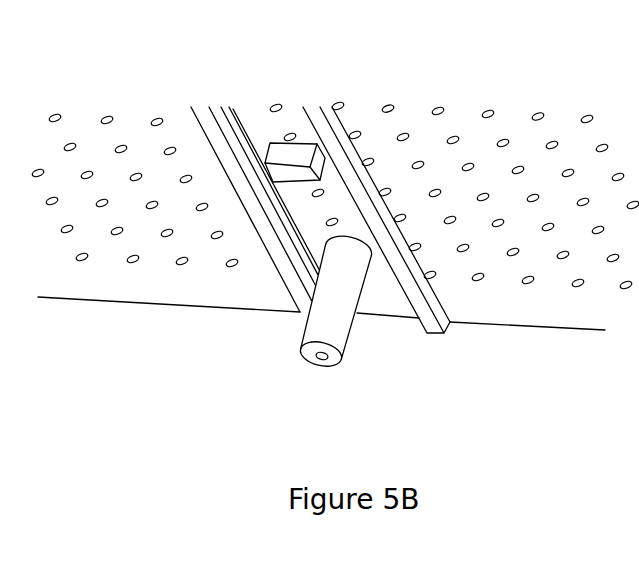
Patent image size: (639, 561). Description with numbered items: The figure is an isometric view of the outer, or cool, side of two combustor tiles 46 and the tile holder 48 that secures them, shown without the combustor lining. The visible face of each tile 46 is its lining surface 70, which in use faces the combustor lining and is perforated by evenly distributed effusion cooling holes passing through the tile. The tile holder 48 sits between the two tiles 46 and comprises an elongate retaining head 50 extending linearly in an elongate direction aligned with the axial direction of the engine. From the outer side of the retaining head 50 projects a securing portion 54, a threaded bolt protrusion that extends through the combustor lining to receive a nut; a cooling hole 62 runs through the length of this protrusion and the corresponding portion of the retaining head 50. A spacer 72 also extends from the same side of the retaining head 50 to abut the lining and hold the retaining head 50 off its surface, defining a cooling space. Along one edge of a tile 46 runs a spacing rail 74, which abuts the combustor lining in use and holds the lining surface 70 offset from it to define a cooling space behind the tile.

The combustor tile 46 is at (107, 279).
The tile holder 48 is at (255, 209).
The retaining head 50 is at (378, 295).
The securing portion 54 is at (345, 341).
The cooling hole 62 is at (322, 359).
The lining surface 70 is at (488, 131).
The spacer 72 is at (286, 153).
The spacing rail 74 is at (285, 268).